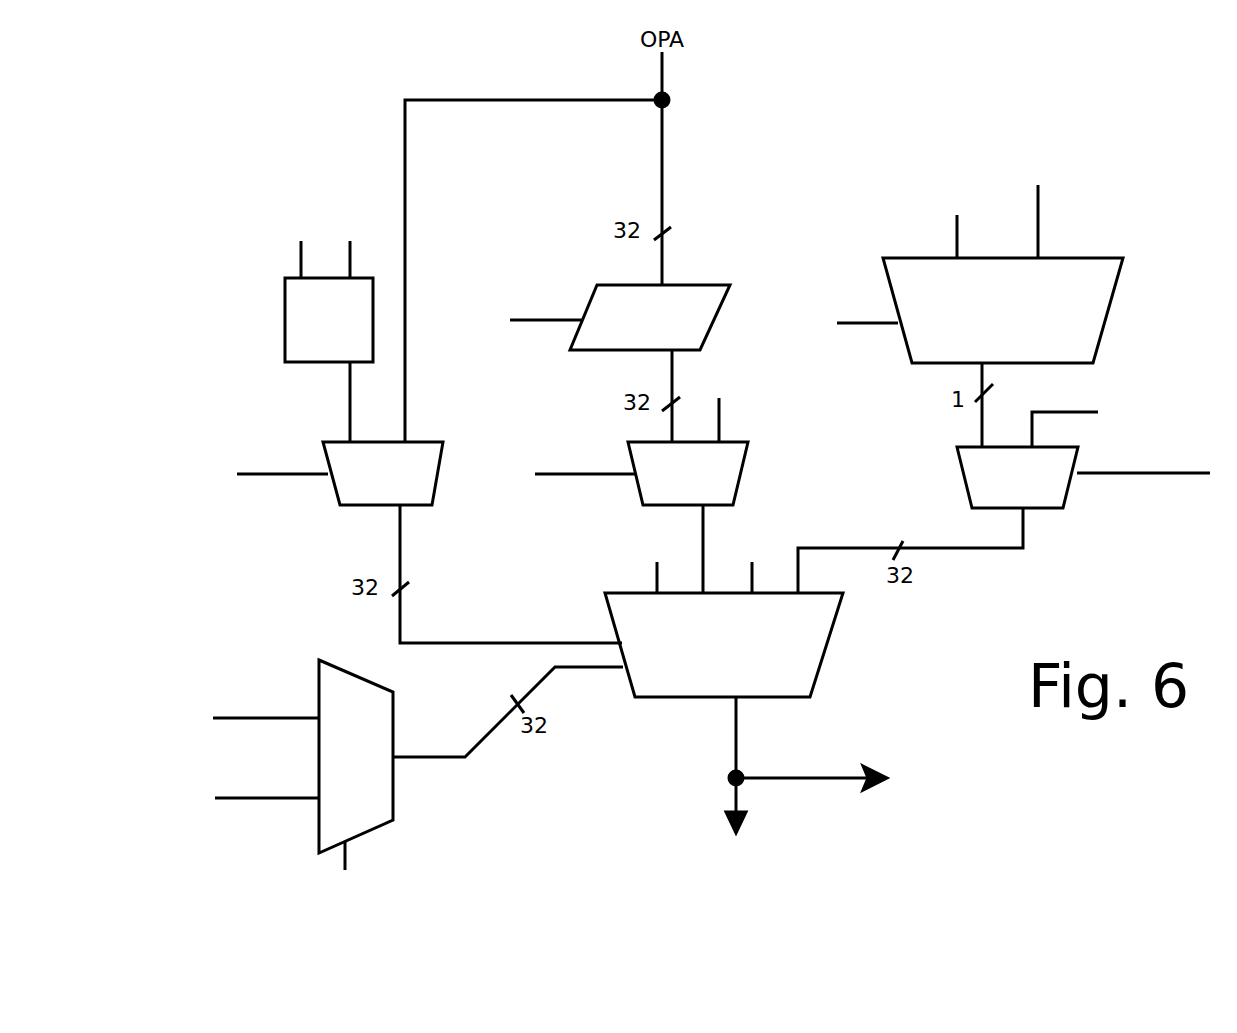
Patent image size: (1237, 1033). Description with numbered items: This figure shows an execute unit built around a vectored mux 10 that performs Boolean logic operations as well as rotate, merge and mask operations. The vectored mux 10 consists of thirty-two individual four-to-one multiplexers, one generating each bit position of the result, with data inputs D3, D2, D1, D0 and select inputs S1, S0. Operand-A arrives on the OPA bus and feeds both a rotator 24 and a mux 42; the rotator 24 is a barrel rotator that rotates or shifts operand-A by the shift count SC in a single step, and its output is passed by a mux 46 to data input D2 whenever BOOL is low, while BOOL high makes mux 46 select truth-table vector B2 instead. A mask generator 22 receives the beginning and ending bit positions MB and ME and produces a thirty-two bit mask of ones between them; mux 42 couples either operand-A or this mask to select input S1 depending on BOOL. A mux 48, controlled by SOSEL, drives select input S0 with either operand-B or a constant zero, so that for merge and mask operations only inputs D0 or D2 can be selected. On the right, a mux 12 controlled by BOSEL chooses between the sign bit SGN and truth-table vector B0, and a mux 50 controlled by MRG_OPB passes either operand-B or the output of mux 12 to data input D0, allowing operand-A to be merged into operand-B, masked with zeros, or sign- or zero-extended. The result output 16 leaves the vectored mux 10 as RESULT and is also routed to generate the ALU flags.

The vectored mux 10 is at (823, 667).
The mux 12 is at (1107, 330).
The result output 16 is at (736, 757).
The mask generator 22 is at (285, 330).
The rotator 24 is at (720, 285).
The mux 42 is at (337, 486).
The mux 46 is at (738, 476).
The mux 48 is at (393, 808).
The mux 50 is at (961, 480).